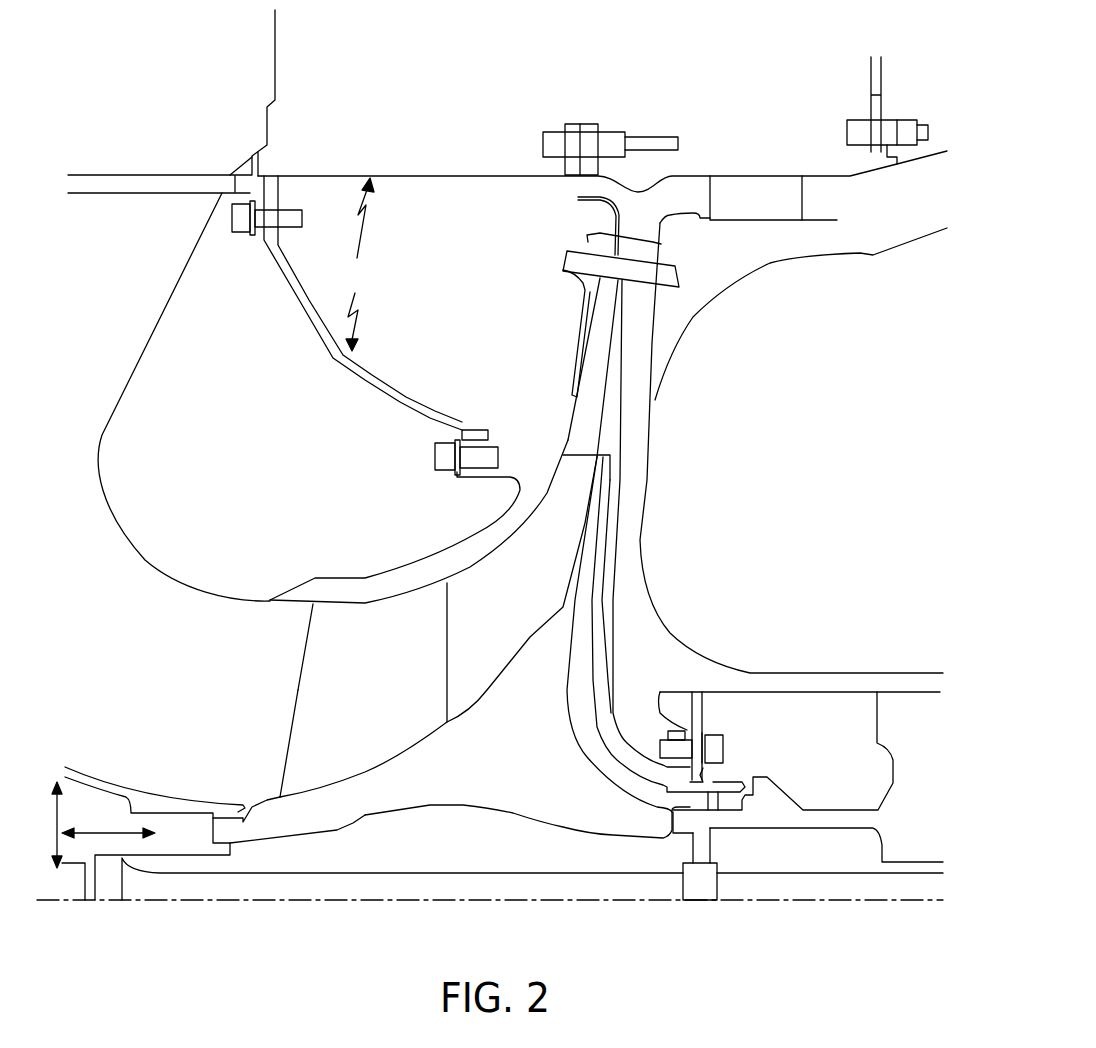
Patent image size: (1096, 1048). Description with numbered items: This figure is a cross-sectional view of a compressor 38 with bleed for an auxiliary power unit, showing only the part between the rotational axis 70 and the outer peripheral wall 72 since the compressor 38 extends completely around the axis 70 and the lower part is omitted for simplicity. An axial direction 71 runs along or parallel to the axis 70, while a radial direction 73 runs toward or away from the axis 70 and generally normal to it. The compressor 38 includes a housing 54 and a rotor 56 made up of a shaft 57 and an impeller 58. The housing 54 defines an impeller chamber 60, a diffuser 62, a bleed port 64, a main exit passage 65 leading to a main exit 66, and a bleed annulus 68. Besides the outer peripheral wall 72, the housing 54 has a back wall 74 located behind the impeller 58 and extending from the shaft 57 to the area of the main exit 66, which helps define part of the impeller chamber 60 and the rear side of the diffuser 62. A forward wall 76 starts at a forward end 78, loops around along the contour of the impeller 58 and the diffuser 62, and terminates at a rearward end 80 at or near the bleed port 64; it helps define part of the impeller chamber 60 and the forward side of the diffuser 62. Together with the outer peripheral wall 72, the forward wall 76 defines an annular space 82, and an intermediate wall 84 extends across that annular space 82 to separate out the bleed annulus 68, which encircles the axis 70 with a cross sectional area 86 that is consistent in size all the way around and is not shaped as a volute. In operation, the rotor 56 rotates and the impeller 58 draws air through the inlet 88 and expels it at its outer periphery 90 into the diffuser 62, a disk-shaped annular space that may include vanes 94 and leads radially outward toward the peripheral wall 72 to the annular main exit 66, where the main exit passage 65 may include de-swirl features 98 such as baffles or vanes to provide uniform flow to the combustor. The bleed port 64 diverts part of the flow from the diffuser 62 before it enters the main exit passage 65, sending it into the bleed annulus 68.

The compressor 38 is at (764, 145).
The housing 54 is at (342, 165).
The rotor 56 is at (580, 890).
The shaft 57 is at (885, 888).
The impeller 58 is at (521, 772).
The impeller chamber 60 is at (212, 685).
The diffuser 62 is at (620, 374).
The bleed port 64 is at (578, 192).
The main exit passage 65 is at (702, 193).
The main exit 66 is at (815, 205).
The bleed annulus 68 is at (452, 306).
The rotational axis 70 is at (58, 902).
The axial direction 71 is at (118, 830).
The outer peripheral wall 72 is at (430, 176).
The radial direction 73 is at (56, 811).
The back wall 74 is at (612, 637).
The forward wall 76 is at (328, 586).
The forward end 78 is at (228, 195).
The rearward end 80 is at (618, 222).
The annular space 82 is at (150, 449).
The intermediate wall 84 is at (325, 327).
The cross sectional area 86 is at (355, 264).
The inlet 88 is at (145, 719).
The outer periphery 90 is at (593, 450).
The vanes 94 is at (623, 313).
The de-swirl features 98 is at (758, 200).